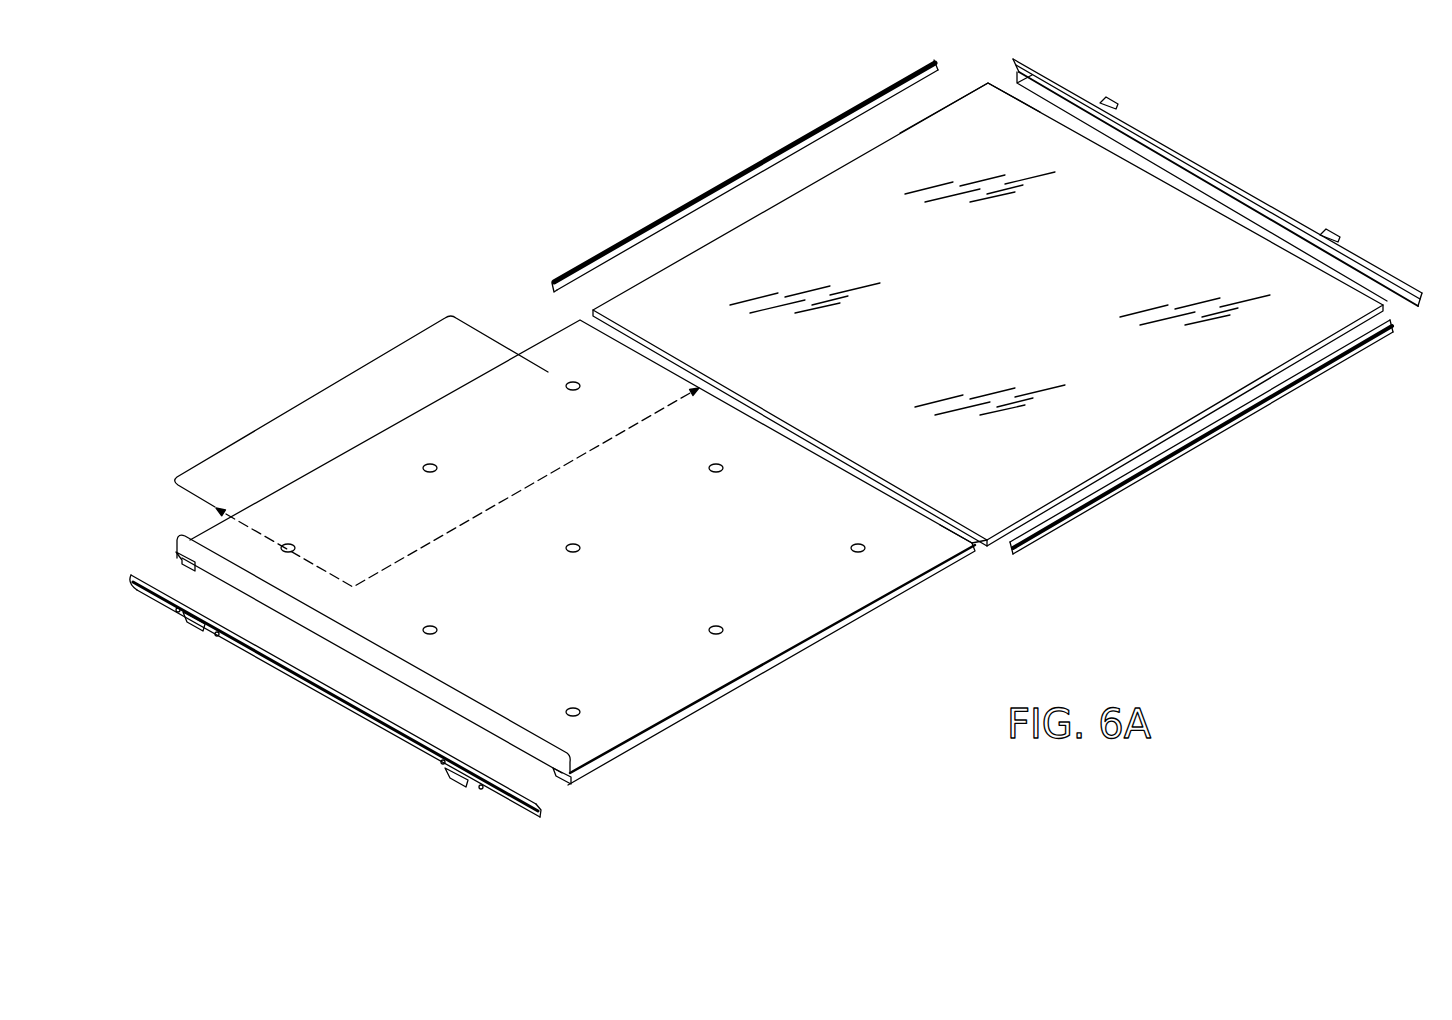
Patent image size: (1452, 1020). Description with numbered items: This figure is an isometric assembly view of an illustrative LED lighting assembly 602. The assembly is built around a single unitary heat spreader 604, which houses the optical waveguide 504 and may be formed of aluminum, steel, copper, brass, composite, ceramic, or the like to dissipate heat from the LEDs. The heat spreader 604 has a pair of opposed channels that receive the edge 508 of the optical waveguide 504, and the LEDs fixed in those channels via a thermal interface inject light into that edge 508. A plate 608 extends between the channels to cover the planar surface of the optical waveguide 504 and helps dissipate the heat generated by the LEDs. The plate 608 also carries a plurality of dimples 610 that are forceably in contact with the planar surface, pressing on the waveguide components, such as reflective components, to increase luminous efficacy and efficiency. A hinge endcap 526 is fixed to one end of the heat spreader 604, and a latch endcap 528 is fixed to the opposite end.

The LED lighting assembly 602 is at (475, 140).
The optical waveguide 504 is at (1000, 308).
The latch endcap 528 is at (1211, 158).
The hinge endcap 526 is at (322, 708).
The heat spreader 604 is at (753, 686).
The plate 608 is at (338, 624).
The edge 508 is at (1000, 542).
The plurality of dimples 610 is at (327, 386).